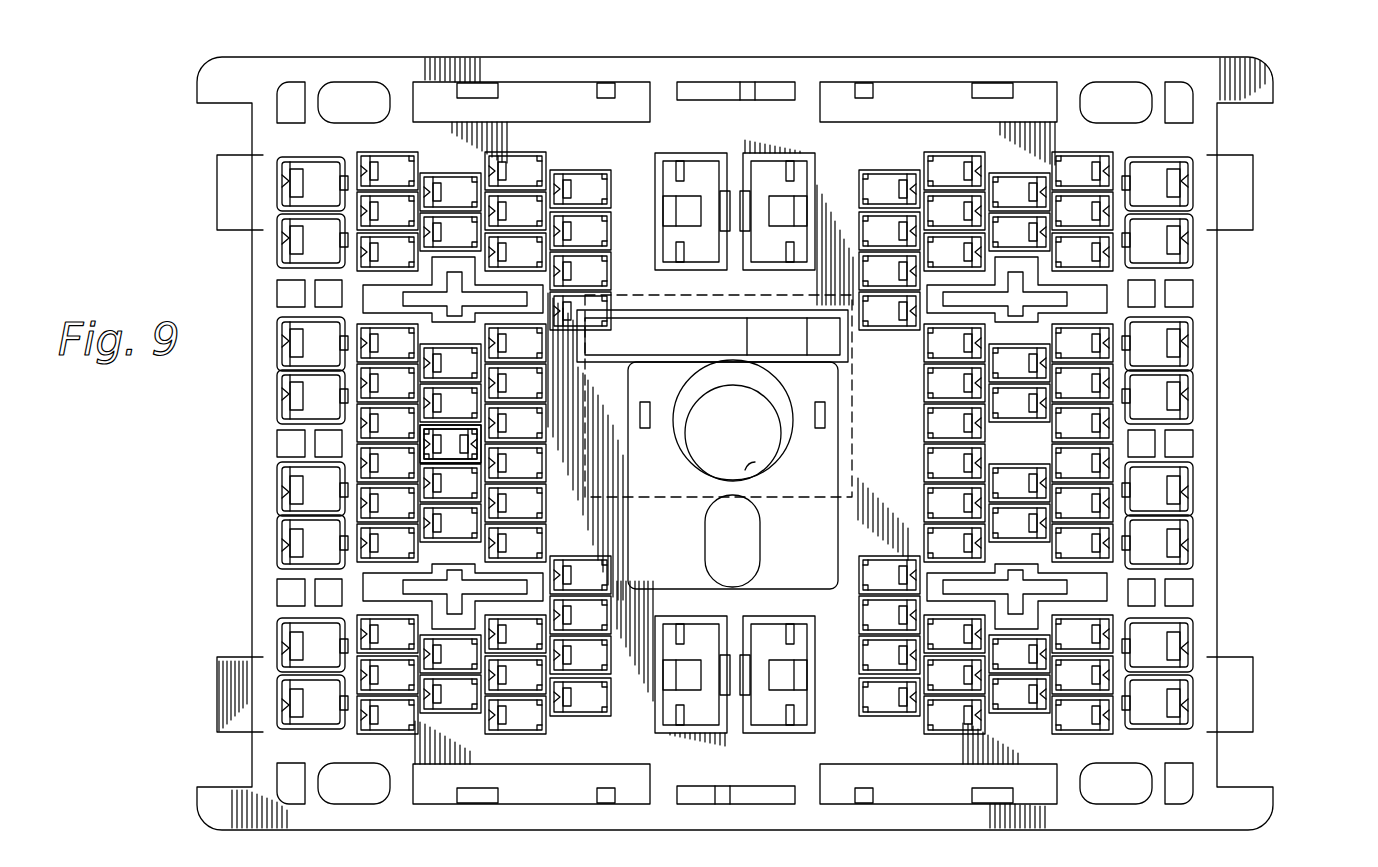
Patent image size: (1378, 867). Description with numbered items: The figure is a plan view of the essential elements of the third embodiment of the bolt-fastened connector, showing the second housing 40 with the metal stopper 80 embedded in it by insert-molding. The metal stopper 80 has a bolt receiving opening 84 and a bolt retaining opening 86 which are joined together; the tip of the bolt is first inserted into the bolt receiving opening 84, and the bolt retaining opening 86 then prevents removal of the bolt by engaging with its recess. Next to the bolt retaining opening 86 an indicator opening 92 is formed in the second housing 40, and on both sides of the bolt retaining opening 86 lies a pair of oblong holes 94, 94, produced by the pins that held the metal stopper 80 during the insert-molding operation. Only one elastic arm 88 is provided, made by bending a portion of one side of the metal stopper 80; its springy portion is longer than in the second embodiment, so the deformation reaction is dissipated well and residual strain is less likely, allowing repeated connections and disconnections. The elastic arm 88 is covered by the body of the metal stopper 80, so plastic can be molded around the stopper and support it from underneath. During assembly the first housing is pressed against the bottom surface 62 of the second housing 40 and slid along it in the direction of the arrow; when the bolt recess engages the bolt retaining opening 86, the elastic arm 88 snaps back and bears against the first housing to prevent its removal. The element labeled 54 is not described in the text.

The second housing 40 is at (1245, 375).
The bottom surface 62 is at (656, 374).
The elastic arm 88 is at (832, 333).
The bolt receiving opening 84 is at (792, 392).
The circular mounting opening 54 is at (752, 402).
The bolt retaining opening 86 is at (752, 477).
The oblong holes 94 is at (645, 428).
The metal stopper 80 is at (702, 556).
The indicator opening 92 is at (752, 556).